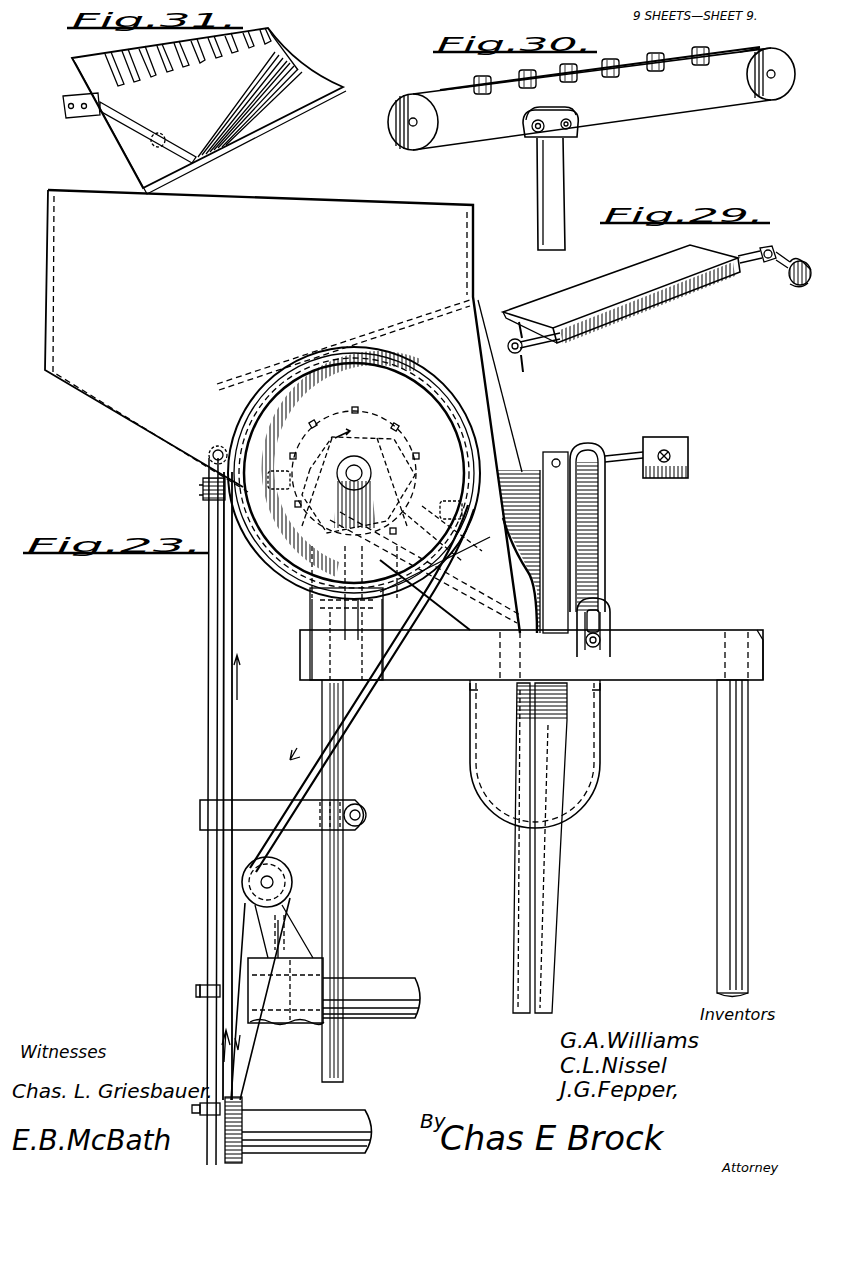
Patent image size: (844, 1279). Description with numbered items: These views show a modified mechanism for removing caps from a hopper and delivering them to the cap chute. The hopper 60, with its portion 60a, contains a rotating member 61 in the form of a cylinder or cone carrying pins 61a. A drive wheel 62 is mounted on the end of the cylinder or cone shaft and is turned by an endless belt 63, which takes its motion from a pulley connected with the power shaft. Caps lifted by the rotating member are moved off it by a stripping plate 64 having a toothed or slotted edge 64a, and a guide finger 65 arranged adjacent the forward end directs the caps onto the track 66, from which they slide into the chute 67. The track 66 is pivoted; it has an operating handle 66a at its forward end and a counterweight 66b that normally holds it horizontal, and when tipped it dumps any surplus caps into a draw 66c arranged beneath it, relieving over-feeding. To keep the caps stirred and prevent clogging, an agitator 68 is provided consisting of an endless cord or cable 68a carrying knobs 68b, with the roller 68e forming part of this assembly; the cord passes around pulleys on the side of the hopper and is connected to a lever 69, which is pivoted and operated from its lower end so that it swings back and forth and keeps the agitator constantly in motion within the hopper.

In FIG. 23, the hopper 60 is at (283, 411).
In FIG. 23, the plate flange 60a is at (396, 320).
In FIG. 23, the rotating member 61 is at (368, 440).
In FIG. 23, the pins 61a is at (312, 428).
In FIG. 23, the drive wheel 62 is at (290, 560).
In FIG. 23, the endless belt 63 is at (233, 637).
In FIG. 31, the stripping plate 64 is at (209, 111).
In FIG. 31, the toothed or slotted edge 64a is at (270, 31).
In FIG. 31, the guide finger 65 is at (138, 135).
In FIG. 29, the track 66 is at (621, 294).
In FIG. 23, the track 66 is at (573, 537).
In FIG. 29, the operating handle 66a is at (525, 350).
In FIG. 23, the operating handle 66a is at (612, 613).
In FIG. 29, the counterweight 66b is at (773, 252).
In FIG. 23, the counterweight 66b is at (678, 438).
In FIG. 23, the draw 66c is at (493, 723).
In FIG. 23, the chute 67 is at (537, 765).
In FIG. 30, the agitator 68 is at (600, 77).
In FIG. 30, the endless cord or cable 68a is at (672, 58).
In FIG. 30, the knobs 68b is at (706, 62).
In FIG. 30, the roller 68e is at (427, 117).
In FIG. 30, the lever 69 is at (553, 168).
In FIG. 23, the lever 69 is at (219, 750).